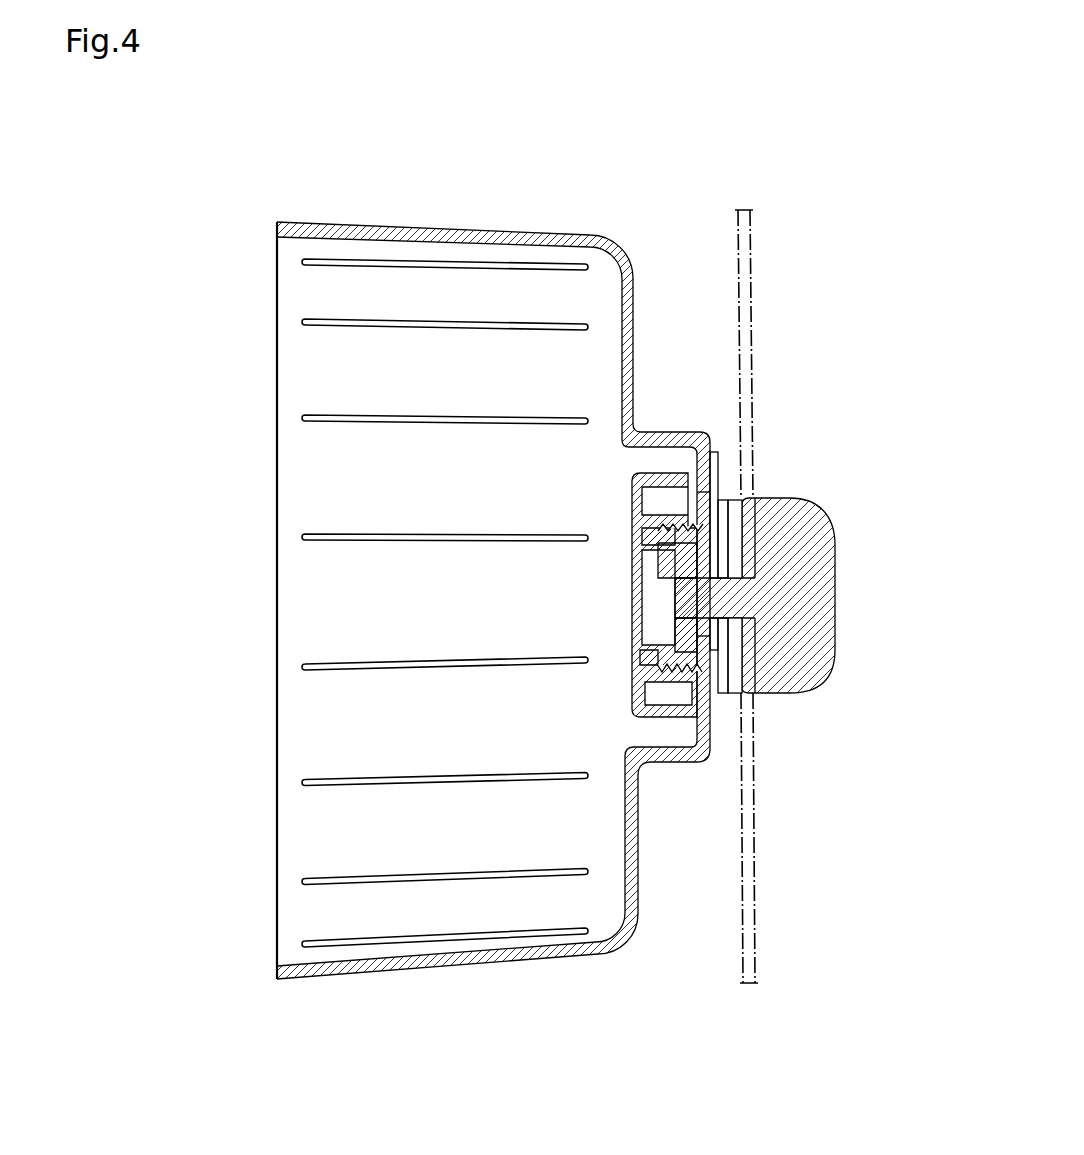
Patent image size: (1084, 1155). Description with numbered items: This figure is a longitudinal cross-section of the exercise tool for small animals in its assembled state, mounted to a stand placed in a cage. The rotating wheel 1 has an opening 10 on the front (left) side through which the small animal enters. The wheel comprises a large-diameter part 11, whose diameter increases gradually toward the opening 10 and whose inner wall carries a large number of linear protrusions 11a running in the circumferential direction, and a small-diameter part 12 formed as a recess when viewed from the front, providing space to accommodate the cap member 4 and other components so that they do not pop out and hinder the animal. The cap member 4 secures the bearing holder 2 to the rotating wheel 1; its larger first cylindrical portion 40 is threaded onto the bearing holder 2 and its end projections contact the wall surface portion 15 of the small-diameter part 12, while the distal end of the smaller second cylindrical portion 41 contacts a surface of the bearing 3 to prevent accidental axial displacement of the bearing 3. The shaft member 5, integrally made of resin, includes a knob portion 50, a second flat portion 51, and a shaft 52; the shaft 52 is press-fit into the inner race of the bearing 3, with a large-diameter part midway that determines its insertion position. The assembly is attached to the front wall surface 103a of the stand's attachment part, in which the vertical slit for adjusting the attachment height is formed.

The rotating wheel 1 is at (512, 211).
The opening 10 is at (258, 507).
The large-diameter part 11 is at (608, 998).
The linear protrusions 11a is at (332, 940).
The small-diameter part 12 is at (645, 423).
The bearing holder 2 is at (718, 473).
The bearing 3 is at (712, 650).
The cap member 4 is at (684, 740).
The first cylindrical portion 40 is at (705, 492).
The second cylindrical portion 41 is at (700, 636).
The shaft member 5 is at (837, 521).
The knob portion 50 is at (823, 594).
The second flat portion 51 is at (738, 502).
The shaft 52 is at (673, 597).
The wall surface portion 15 is at (709, 731).
The front wall surface 103a is at (753, 222).